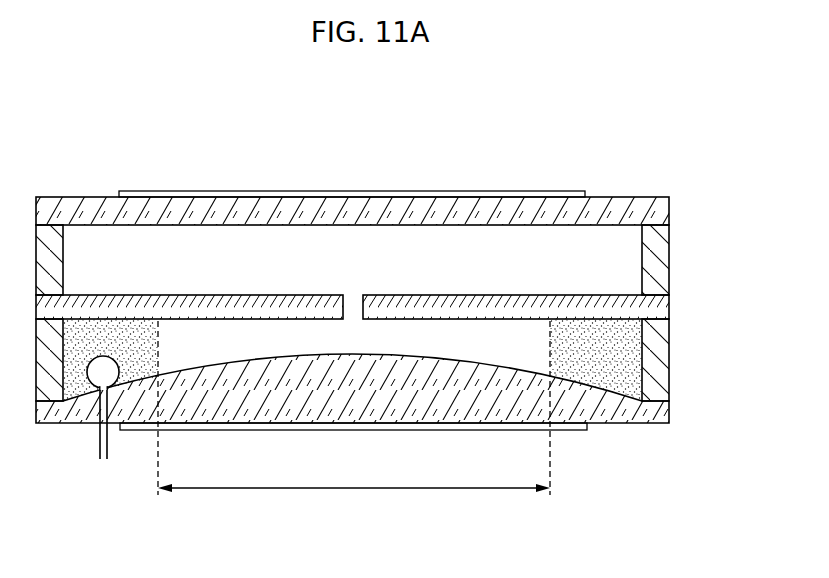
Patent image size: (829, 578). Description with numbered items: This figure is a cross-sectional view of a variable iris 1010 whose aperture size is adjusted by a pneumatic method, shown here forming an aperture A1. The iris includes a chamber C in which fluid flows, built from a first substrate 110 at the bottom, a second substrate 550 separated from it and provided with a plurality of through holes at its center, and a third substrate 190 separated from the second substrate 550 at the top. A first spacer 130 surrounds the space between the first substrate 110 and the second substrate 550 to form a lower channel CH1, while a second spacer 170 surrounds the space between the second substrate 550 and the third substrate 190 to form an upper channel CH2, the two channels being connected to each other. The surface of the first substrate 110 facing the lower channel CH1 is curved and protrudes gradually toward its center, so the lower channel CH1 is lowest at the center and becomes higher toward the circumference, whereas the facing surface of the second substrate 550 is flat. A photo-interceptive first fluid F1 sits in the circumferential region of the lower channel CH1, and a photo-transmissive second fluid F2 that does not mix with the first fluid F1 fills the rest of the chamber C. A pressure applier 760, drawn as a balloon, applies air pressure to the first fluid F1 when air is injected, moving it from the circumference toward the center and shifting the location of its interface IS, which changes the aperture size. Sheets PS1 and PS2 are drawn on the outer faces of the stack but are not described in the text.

The variable iris 1010 is at (637, 148).
The third substrate 190 is at (661, 203).
The second spacer 170 is at (660, 259).
The second substrate 550 is at (661, 318).
The first spacer 130 is at (662, 366).
The first substrate 110 is at (662, 412).
The pressure applier 760 is at (100, 444).
The first polarizing sheet PS1 is at (168, 191).
The second polarizing sheet PS2 is at (569, 431).
The chamber C is at (428, 140).
The lower channel CH1 is at (397, 338).
The upper channel CH2 is at (417, 255).
The interface IS is at (549, 330).
The first fluid F1 is at (595, 360).
The second fluid F2 is at (293, 360).
The aperture A1 is at (354, 417).